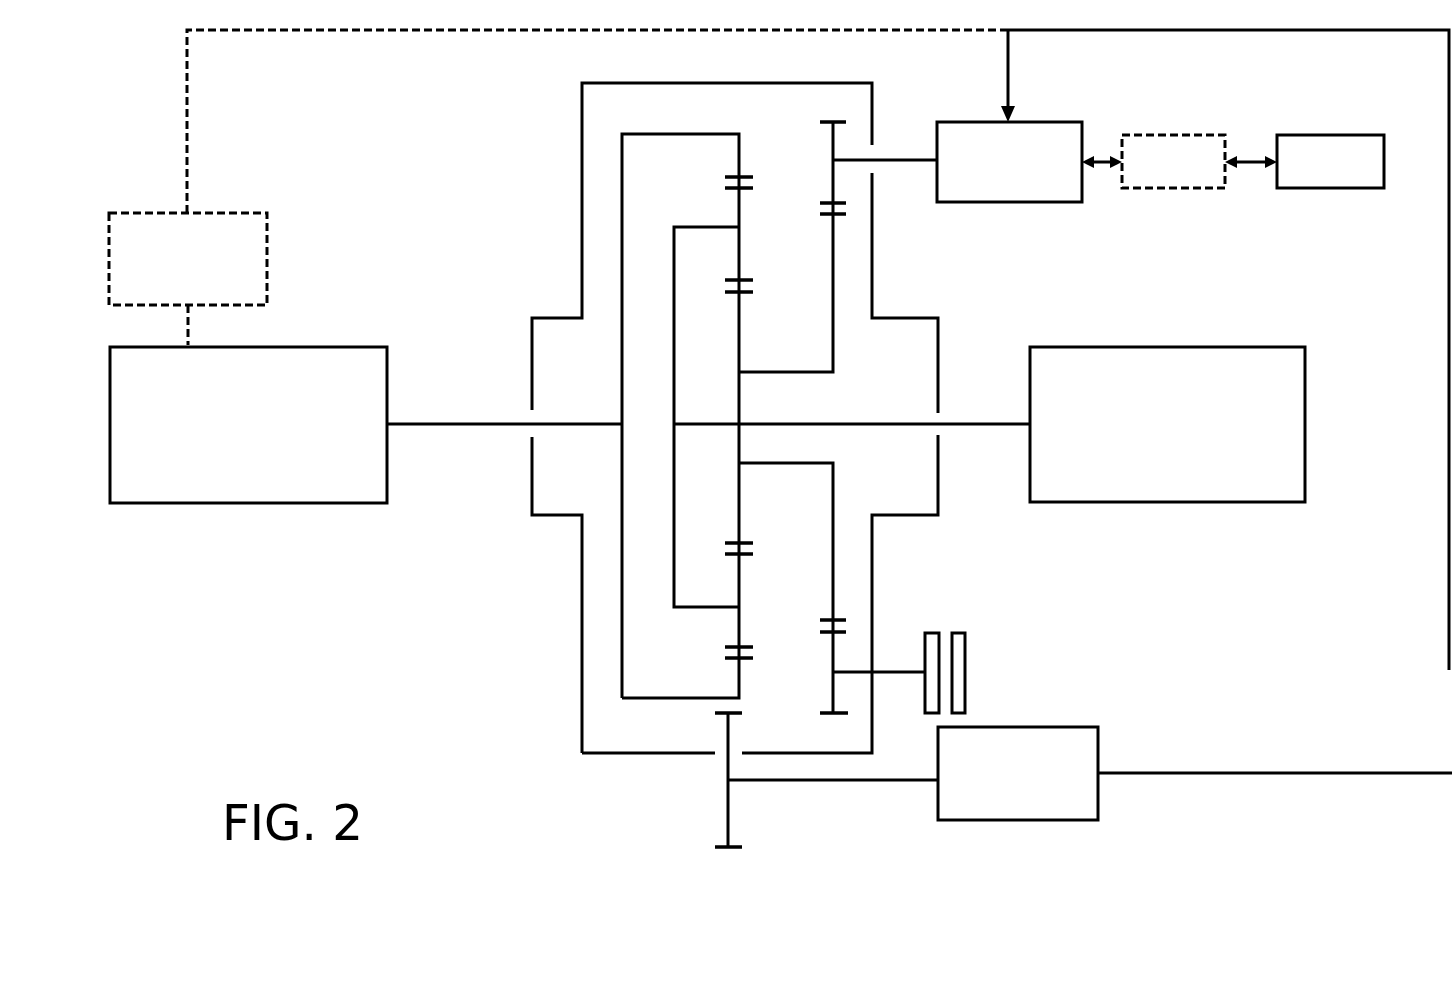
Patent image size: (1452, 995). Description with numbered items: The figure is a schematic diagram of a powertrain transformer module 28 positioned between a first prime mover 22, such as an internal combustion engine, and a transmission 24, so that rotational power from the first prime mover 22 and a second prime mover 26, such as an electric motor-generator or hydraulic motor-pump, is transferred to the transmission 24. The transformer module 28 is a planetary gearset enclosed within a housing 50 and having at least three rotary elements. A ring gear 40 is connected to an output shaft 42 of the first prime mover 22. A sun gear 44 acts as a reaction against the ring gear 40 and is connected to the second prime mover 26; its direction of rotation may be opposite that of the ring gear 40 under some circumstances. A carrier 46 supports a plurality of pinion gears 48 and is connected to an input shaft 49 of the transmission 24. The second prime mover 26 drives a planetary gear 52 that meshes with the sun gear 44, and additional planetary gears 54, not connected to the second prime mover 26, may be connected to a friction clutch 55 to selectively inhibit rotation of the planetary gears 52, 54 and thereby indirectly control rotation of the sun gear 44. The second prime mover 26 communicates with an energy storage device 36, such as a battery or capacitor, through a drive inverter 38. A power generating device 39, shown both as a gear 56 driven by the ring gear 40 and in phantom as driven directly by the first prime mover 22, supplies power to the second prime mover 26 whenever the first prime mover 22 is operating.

The first prime mover 22 is at (308, 345).
The transmission 24 is at (1242, 347).
The second prime mover 26 is at (1057, 122).
The powertrain transformer module 28 is at (540, 183).
The energy storage device 36 is at (1360, 135).
The drive inverter 38 is at (1190, 135).
The power generating device 39 is at (243, 213).
The ring gear 40 is at (687, 134).
The output shaft 42 is at (440, 424).
The sun gear 44 is at (755, 372).
The carrier 46 is at (674, 569).
The pinion gears 48 is at (739, 212).
The input shaft 49 is at (835, 424).
The housing 50 is at (582, 596).
The planetary gear 52 is at (835, 143).
The additional planetary gears 54 is at (833, 655).
The friction clutch 55 is at (966, 633).
The gear 56 is at (727, 797).